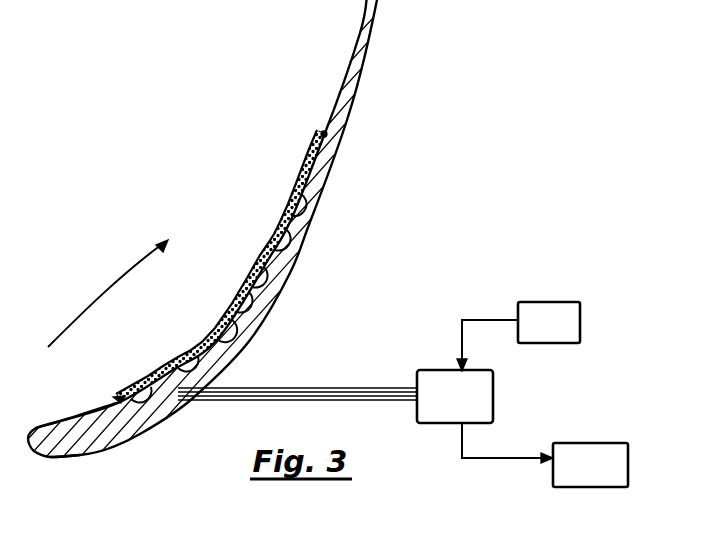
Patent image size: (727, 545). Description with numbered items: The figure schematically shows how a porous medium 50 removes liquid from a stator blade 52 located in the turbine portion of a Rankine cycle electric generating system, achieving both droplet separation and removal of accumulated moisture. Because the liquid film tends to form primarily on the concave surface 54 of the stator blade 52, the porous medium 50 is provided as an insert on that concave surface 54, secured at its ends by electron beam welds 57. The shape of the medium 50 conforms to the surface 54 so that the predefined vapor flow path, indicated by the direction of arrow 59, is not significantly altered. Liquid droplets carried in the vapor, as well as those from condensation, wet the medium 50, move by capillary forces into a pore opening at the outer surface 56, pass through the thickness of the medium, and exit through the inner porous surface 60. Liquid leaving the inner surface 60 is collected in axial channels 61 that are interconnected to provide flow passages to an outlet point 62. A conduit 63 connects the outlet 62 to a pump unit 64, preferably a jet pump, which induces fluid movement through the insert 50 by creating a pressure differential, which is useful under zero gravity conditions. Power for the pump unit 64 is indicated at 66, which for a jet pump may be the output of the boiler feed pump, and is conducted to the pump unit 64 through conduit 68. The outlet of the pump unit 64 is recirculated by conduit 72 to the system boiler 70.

The porous medium 50 is at (214, 266).
The stator blade 52 is at (235, 228).
The concave surface 54 is at (353, 47).
The outer surface 56 is at (163, 372).
The electron beam welds 57 is at (323, 133).
The arrow 59 is at (108, 293).
The inner porous surface 60 is at (277, 248).
The axial channels 61 is at (260, 288).
The outlet point 62 is at (172, 381).
The conduit 63 is at (312, 390).
The pump unit 64 is at (425, 368).
The power for the pump unit 66 is at (547, 302).
The conduit 68 is at (470, 316).
The system boiler 70 is at (580, 442).
The conduit 72 is at (458, 440).